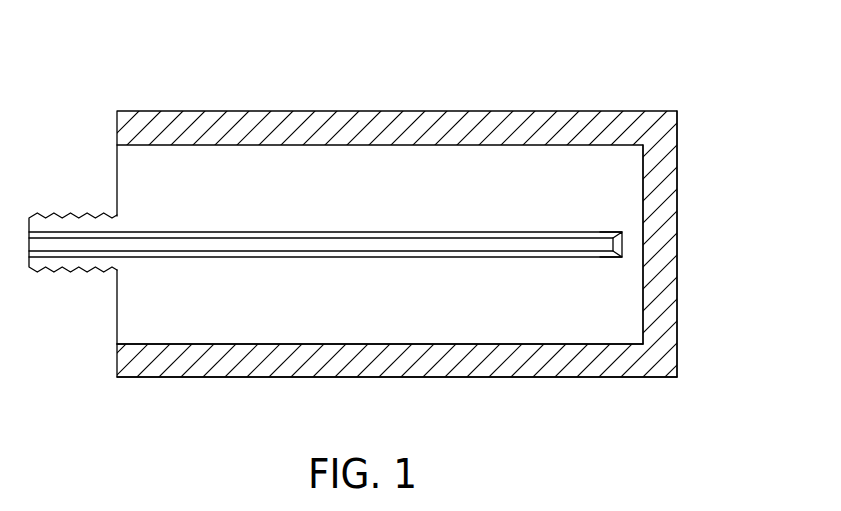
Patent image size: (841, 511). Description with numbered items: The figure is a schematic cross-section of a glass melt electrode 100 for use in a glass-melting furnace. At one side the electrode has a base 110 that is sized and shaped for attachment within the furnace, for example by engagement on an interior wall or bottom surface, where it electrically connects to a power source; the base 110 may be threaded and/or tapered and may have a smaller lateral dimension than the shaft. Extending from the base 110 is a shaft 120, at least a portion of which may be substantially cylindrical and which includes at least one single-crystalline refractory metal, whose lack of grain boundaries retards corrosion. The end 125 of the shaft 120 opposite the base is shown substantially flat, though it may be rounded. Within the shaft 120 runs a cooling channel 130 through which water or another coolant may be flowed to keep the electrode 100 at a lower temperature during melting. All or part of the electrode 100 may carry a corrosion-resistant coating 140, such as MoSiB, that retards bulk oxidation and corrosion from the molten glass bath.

The glass melt electrode 100 is at (165, 58).
The base 110 is at (37, 272).
The shaft 120 is at (499, 157).
The end 125 is at (645, 180).
The cooling channel 130 is at (622, 241).
The corrosion-resistant coating 140 is at (631, 377).